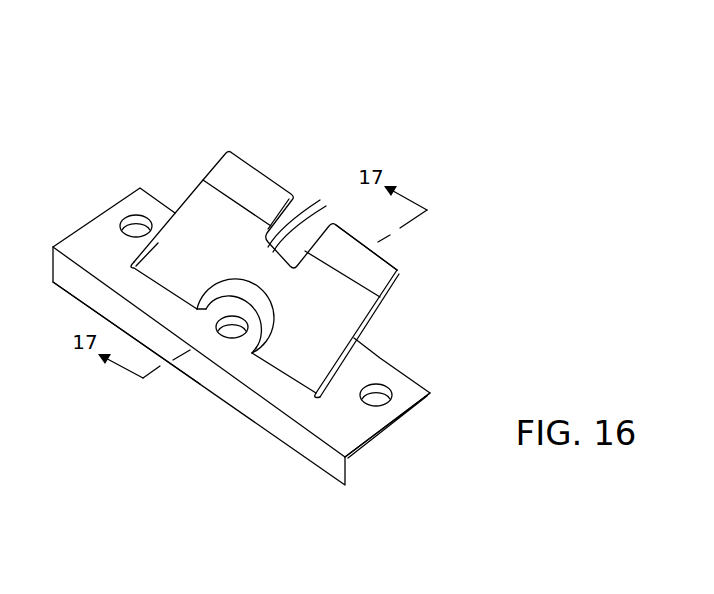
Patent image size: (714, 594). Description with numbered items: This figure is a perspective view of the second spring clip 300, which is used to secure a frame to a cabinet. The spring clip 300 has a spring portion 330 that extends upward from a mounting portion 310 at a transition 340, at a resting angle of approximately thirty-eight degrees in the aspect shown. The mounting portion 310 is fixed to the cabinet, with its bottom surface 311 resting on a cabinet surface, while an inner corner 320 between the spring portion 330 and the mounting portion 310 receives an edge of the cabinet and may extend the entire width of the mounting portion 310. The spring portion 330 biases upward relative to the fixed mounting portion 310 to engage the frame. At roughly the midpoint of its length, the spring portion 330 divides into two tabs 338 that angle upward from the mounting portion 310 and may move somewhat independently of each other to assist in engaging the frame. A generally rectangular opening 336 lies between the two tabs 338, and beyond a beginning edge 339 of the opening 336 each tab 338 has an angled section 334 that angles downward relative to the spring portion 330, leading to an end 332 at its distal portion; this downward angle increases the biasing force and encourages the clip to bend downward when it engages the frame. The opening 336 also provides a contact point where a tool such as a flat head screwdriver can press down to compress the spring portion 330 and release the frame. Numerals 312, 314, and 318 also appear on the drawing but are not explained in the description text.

The second spring clip 300 is at (393, 137).
The mounting portion 310 is at (262, 373).
The bottom surface 311 is at (375, 438).
The mounting holes 312 is at (137, 227).
The front face of flange 314 is at (247, 402).
The arched loop with opening 318 is at (250, 298).
The inner corner 320 is at (352, 455).
The spring portion 330 is at (243, 216).
The end 332 is at (250, 158).
The angled section 334 is at (388, 293).
The opening 336 is at (322, 203).
The tabs 338 is at (207, 220).
The beginning edge 339 is at (292, 223).
The transition 340 is at (168, 284).